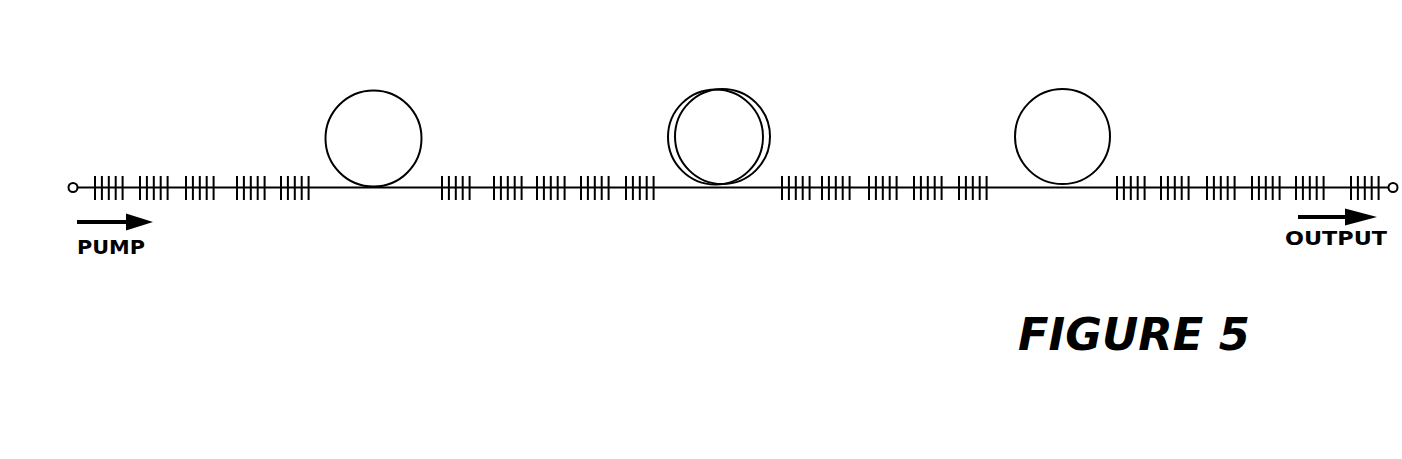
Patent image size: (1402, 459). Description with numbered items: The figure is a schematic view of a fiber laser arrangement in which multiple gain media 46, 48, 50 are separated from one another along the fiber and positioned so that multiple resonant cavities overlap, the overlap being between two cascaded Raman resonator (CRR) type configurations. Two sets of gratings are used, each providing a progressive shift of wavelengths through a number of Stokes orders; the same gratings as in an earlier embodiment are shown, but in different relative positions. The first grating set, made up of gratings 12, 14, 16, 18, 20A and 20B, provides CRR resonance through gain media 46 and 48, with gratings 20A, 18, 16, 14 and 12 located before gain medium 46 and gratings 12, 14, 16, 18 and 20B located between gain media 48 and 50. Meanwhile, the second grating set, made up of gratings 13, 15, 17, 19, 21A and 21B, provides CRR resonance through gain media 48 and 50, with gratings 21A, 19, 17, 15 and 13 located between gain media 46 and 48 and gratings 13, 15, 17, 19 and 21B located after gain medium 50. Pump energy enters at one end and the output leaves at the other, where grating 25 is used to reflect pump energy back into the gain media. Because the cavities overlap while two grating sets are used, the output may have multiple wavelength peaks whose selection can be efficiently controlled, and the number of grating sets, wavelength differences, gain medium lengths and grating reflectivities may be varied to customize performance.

The grating 12 is at (293, 173).
The grating 13 is at (638, 167).
The grating 14 is at (252, 173).
The grating 15 is at (597, 167).
The grating 16 is at (203, 173).
The grating 17 is at (550, 167).
The grating 18 is at (160, 173).
The grating 19 is at (507, 167).
The grating 20A is at (110, 173).
The grating 20B is at (977, 167).
The grating 21A is at (458, 170).
The grating 21B is at (1317, 167).
The grating 25 is at (1367, 167).
The gain medium 46 is at (363, 88).
The gain medium 48 is at (712, 88).
The gain medium 50 is at (1052, 88).